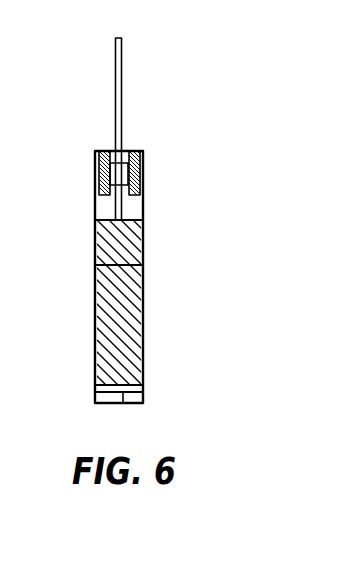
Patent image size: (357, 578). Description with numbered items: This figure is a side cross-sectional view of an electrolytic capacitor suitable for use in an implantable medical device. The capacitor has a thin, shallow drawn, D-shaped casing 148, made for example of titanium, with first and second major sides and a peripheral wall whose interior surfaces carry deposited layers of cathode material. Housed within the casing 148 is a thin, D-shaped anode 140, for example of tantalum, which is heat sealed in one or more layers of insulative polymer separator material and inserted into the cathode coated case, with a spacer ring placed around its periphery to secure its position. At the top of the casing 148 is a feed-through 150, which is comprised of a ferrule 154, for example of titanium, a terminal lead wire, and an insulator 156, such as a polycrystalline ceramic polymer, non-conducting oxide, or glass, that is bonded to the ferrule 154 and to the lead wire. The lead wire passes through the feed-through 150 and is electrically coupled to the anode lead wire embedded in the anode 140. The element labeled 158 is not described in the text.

The anode 140 is at (117, 322).
The casing 148 is at (143, 290).
The feed-through 150 is at (131, 152).
The ferrule 154 is at (144, 172).
The insulator 156 is at (143, 218).
The end cap 158 is at (123, 397).